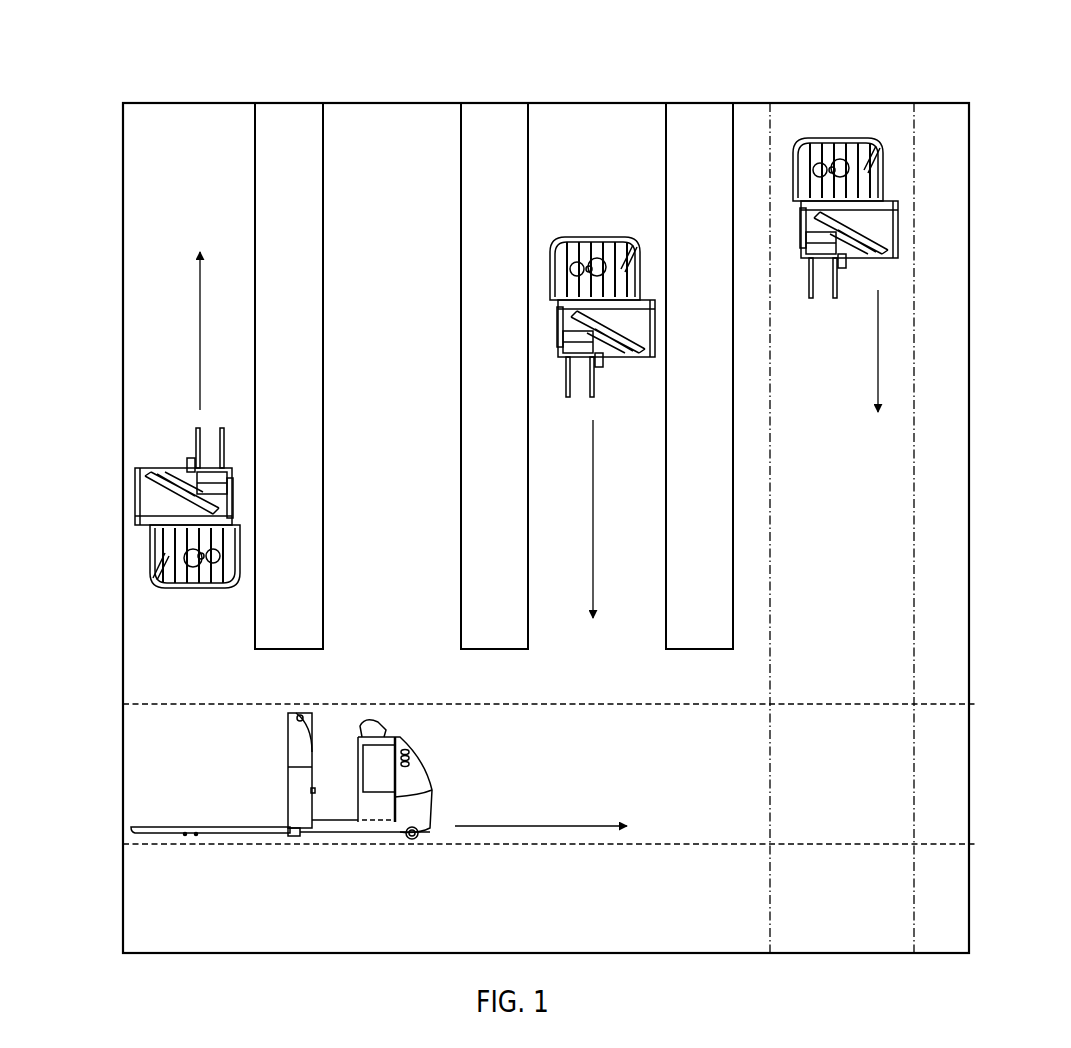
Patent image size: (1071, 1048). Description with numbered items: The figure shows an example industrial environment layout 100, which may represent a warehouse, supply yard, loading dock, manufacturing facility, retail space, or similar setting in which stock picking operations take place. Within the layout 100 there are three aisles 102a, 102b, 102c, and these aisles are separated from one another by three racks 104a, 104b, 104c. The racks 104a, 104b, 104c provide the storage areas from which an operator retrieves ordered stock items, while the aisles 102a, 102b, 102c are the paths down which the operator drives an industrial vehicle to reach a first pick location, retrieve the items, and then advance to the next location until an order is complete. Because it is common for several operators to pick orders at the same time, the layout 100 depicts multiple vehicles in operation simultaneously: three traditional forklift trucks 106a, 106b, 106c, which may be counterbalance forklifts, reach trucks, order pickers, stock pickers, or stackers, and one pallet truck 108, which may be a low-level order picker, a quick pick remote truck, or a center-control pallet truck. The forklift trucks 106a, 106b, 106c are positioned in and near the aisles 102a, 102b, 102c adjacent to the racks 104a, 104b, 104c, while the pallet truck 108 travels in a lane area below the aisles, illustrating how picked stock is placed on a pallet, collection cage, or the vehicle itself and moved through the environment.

The industrial environment layout 100 is at (120, 64).
The aisle 102a is at (189, 120).
The aisle 102b is at (373, 120).
The aisle 102c is at (590, 120).
The rack 104a is at (287, 120).
The rack 104b is at (488, 120).
The rack 104c is at (695, 120).
The forklift truck 106a is at (137, 510).
The forklift truck 106b is at (650, 330).
The forklift truck 106c is at (895, 215).
The pallet truck 108 is at (240, 767).